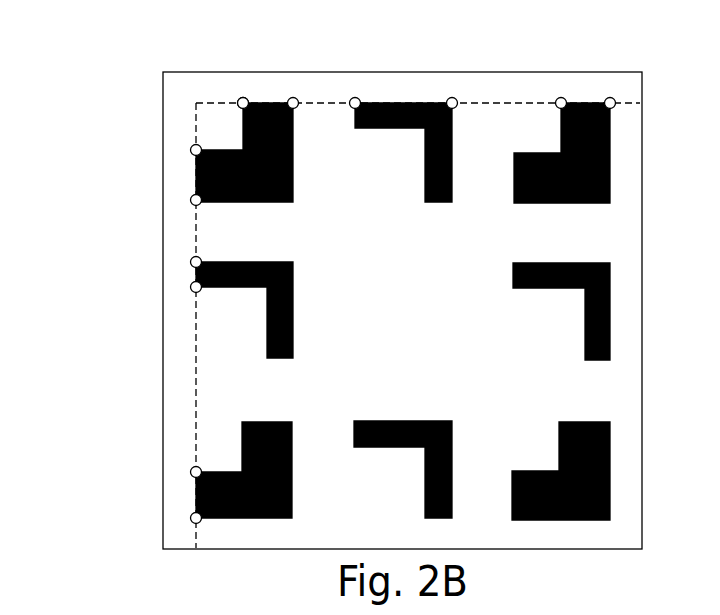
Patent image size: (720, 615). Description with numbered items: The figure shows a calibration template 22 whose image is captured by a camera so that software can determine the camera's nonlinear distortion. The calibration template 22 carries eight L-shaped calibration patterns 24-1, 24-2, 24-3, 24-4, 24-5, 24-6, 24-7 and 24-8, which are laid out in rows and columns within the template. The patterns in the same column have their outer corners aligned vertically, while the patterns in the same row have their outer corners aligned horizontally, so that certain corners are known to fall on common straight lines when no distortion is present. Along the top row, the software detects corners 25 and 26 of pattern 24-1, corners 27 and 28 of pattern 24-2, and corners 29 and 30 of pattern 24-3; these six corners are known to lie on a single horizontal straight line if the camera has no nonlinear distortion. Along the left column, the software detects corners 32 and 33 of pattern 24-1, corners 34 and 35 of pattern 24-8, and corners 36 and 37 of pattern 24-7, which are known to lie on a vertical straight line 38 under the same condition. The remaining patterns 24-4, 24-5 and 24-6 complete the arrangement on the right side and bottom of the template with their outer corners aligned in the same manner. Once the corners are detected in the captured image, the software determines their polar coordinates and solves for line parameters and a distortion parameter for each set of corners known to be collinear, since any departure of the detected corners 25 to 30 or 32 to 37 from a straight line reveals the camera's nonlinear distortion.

The calibration template 22 is at (163, 72).
The straight line 38 is at (197, 110).
The L-shaped calibration pattern 24-1 is at (293, 167).
The L-shaped calibration pattern 24-2 is at (452, 143).
The L-shaped calibration pattern 24-3 is at (514, 190).
The L-shaped calibration pattern 24-4 is at (513, 270).
The L-shaped calibration pattern 24-5 is at (512, 505).
The L-shaped calibration pattern 24-6 is at (452, 460).
The L-shaped calibration pattern 24-7 is at (292, 489).
The L-shaped calibration pattern 24-8 is at (293, 311).
The corner 25 is at (246, 98).
The corner 26 is at (296, 98).
The corner 27 is at (359, 99).
The corner 28 is at (455, 99).
The corner 29 is at (564, 99).
The corner 30 is at (613, 99).
The corner 32 is at (191, 150).
The corner 33 is at (238, 103).
The corner 34 is at (191, 262).
The corner 35 is at (191, 288).
The corner 36 is at (191, 472).
The corner 37 is at (191, 518).